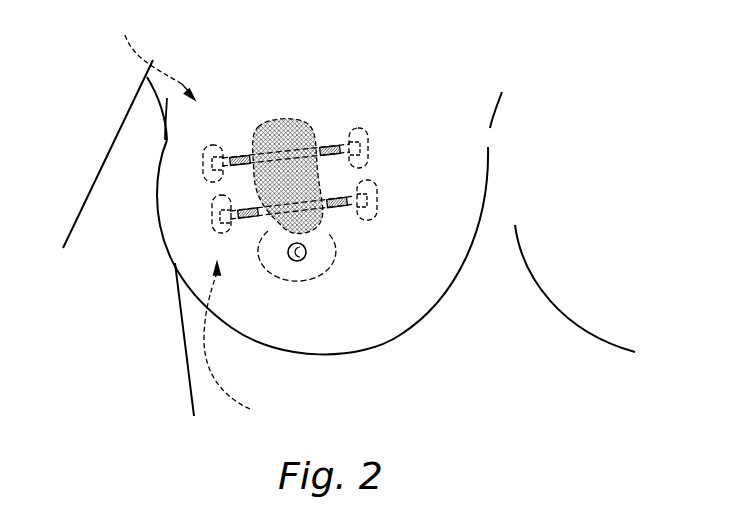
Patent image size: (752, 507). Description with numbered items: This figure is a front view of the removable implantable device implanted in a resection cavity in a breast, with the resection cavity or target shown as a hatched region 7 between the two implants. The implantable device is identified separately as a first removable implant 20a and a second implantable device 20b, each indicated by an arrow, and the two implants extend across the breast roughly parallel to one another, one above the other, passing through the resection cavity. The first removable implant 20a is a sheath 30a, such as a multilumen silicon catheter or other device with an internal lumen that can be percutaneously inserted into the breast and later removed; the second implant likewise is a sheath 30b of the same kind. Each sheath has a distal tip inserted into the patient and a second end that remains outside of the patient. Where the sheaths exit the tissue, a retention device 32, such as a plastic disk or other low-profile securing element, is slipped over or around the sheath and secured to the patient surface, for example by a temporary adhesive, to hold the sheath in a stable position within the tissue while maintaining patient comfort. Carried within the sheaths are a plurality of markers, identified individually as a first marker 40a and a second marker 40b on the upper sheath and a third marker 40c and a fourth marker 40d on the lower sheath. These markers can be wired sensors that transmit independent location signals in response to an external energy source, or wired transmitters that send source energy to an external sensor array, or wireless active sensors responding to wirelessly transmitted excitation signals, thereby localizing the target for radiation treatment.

The lesion / target tissue 7 is at (301, 128).
The removable implant 20a is at (150, 56).
The implantable device 20b is at (247, 343).
The sheath 30a is at (218, 146).
The second elongate member 30b is at (367, 222).
The retention device 32 is at (210, 147).
The first marker 40a is at (241, 155).
The second marker 40b is at (329, 146).
The third marker 40c is at (247, 218).
The fourth marker 40d is at (339, 208).